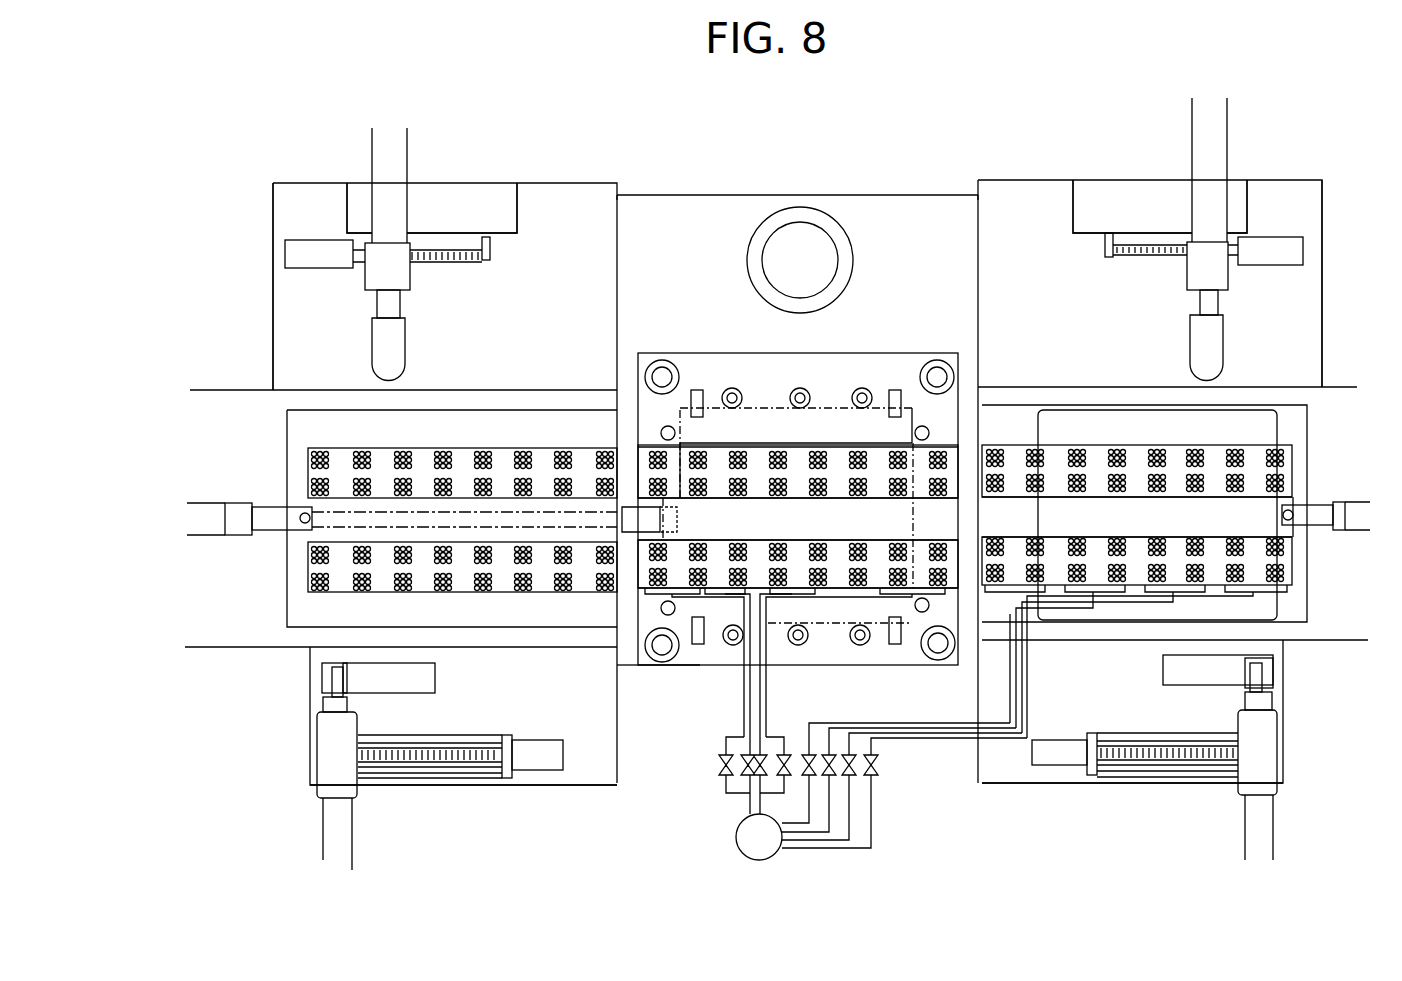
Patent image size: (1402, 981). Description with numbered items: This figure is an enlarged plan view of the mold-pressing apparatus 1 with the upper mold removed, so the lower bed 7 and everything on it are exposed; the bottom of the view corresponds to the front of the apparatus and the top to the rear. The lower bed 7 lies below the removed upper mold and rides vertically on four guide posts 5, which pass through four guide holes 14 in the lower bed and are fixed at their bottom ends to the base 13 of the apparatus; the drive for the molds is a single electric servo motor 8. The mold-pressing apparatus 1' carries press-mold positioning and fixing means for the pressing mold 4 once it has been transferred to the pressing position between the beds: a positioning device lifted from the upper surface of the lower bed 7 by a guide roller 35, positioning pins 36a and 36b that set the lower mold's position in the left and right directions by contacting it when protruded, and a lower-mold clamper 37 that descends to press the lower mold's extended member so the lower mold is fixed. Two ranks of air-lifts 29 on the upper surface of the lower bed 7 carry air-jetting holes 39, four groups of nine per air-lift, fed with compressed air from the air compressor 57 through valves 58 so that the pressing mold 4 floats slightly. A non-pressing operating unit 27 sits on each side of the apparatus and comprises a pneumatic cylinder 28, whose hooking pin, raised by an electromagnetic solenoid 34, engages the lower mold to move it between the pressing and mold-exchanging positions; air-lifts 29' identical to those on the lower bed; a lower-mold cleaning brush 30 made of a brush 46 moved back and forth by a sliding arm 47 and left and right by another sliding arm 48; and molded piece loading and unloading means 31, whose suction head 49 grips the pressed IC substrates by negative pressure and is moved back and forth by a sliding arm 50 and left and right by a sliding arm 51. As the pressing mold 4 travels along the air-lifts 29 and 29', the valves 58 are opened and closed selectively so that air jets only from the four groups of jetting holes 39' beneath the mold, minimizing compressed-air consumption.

The mold-pressing apparatus 1 is at (976, 125).
The mold-pressing apparatus 1' is at (719, 146).
The pressing mold 4 is at (770, 408).
The guide posts 5 is at (655, 360).
The lower bed 7 is at (866, 353).
The electric servo motor 8 is at (842, 220).
The base 13 is at (632, 665).
The guide holes 14 is at (668, 665).
The non-pressing operating unit 27 is at (225, 188).
The pneumatic cylinder 28 is at (235, 503).
The air-lifts 29 is at (802, 519).
The air-lifts 29' is at (795, 517).
The lower-mold cleaning brush 30 is at (450, 178).
The molded piece loading and unloading means 31 is at (440, 792).
The electromagnetic solenoid 34 is at (300, 522).
The guide roller 35 is at (732, 388).
The positioning pin 36a is at (930, 428).
The positioning pin 36b is at (660, 428).
The lower-mold clamper 37 is at (697, 390).
The air-jetting holes 39 is at (965, 524).
The jetting holes 39' is at (1002, 716).
The brush 46 is at (405, 360).
The sliding arm 47 is at (372, 166).
The sliding arm 48 is at (505, 238).
The suction head 49 is at (322, 672).
The sliding arm 50 is at (368, 710).
The sliding arm 51 is at (415, 733).
The air compressor 57 is at (736, 840).
The valves 58 is at (718, 765).